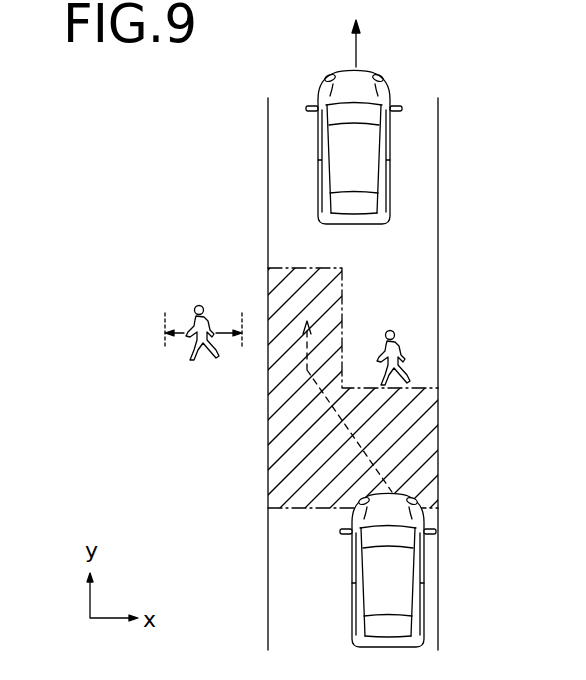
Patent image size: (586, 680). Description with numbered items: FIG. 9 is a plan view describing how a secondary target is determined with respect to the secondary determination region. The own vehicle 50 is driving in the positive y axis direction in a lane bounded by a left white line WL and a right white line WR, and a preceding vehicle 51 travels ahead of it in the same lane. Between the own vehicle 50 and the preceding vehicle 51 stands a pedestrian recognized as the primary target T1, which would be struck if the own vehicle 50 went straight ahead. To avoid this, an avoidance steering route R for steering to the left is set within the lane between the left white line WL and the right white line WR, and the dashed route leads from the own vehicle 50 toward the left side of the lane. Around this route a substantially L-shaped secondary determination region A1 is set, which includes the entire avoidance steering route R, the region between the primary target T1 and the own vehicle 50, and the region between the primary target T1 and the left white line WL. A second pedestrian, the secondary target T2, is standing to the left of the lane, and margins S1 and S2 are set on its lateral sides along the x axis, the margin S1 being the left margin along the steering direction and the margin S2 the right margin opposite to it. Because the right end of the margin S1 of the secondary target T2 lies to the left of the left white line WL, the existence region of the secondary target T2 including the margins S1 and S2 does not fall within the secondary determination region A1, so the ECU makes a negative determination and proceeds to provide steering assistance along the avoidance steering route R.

The preceding vehicle 51 is at (318, 97).
The own vehicle 50 is at (426, 620).
The left white line WL is at (268, 164).
The right white line WR is at (438, 166).
The primary target T1 is at (408, 340).
The secondary target T2 is at (198, 305).
The margin S1 is at (227, 330).
The margin S2 is at (177, 330).
The avoidance steering route R is at (305, 371).
The secondary determination region A1 is at (433, 443).